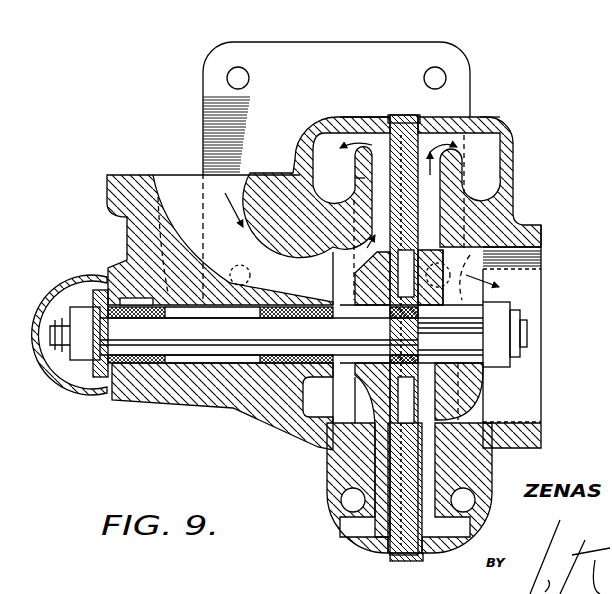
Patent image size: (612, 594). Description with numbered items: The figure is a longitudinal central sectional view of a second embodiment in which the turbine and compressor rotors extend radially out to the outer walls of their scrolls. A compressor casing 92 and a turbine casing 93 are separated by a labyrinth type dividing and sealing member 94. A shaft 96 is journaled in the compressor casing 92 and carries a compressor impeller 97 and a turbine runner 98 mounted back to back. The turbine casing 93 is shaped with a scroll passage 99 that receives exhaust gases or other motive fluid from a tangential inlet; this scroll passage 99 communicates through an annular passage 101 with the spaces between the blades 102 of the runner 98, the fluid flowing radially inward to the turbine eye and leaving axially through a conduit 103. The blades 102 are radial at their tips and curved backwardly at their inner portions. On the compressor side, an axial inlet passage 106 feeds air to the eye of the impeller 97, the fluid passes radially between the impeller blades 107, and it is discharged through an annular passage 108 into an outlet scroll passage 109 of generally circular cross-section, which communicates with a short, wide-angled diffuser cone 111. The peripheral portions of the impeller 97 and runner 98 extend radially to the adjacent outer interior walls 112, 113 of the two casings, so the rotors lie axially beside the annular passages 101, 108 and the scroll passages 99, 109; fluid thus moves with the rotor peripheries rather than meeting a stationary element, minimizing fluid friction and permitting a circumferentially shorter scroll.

The compressor casing 92 is at (127, 230).
The turbine casing 93 is at (508, 178).
The labyrinth type dividing and sealing member 94 is at (400, 125).
The shaft 96 is at (182, 328).
The compressor impeller 97 is at (331, 277).
The turbine runner 98 is at (486, 402).
The scroll passage 99 is at (483, 170).
The annular passage 101 is at (453, 133).
The blades 102 is at (449, 247).
The conduit 103 is at (532, 372).
The axial inlet passage 106 is at (180, 190).
The impeller blades 107 is at (339, 261).
The annular passage 108 is at (358, 130).
The outlet scroll passage 109 is at (310, 160).
The diffuser cone 111 is at (285, 107).
The outer interior wall 112 is at (367, 130).
The outer interior wall 113 is at (426, 133).